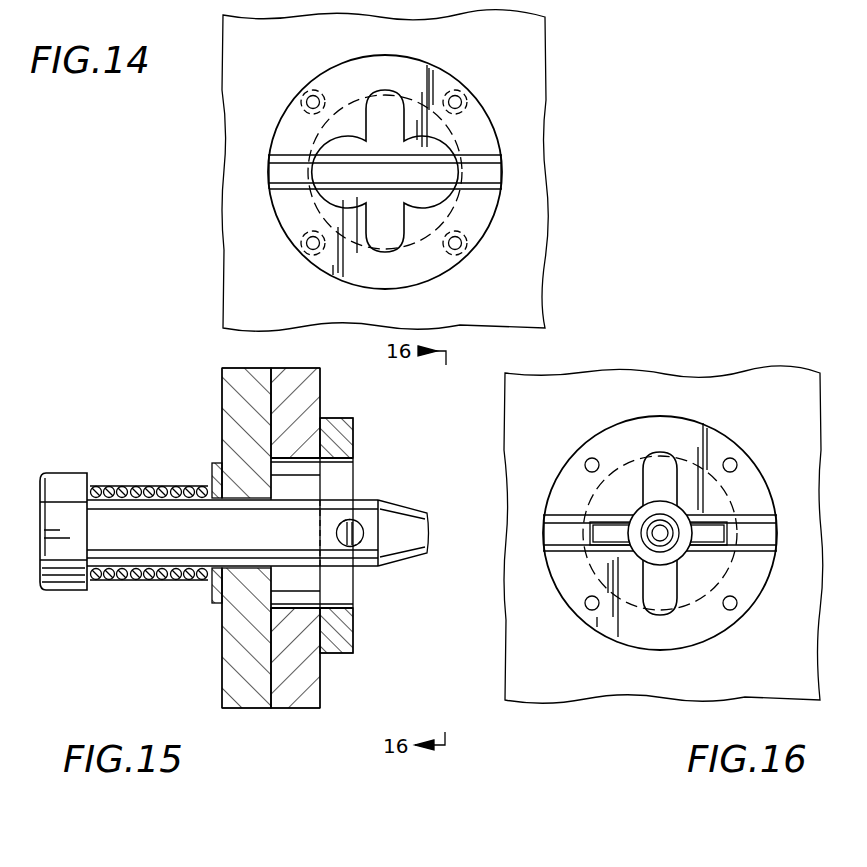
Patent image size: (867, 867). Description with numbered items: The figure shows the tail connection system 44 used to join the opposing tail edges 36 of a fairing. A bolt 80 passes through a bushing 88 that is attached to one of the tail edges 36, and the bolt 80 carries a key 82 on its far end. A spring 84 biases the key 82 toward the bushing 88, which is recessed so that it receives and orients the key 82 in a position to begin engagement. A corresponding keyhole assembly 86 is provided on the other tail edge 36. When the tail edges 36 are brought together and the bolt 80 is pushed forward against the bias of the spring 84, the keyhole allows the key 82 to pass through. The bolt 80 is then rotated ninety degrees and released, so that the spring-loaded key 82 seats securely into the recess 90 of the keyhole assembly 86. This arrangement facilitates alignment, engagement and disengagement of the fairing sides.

In FIG. 15, the tail edge 36 is at (307, 385).
In FIG. 15, the tail connection system 44 is at (129, 408).
In FIG. 15, the bolt 80 is at (120, 512).
In FIG. 16, the bolt 80 is at (640, 557).
In FIG. 15, the key 82 is at (356, 528).
In FIG. 16, the key 82 is at (717, 533).
In FIG. 15, the spring 84 is at (138, 583).
In FIG. 14, the keyhole assembly 86 is at (483, 209).
In FIG. 15, the keyhole assembly 86 is at (345, 440).
In FIG. 16, the keyhole assembly 86 is at (750, 582).
In FIG. 15, the bushing 88 is at (250, 401).
In FIG. 14, the recess 90 is at (283, 183).
In FIG. 15, the recess 90 is at (363, 547).
In FIG. 16, the recess 90 is at (548, 546).